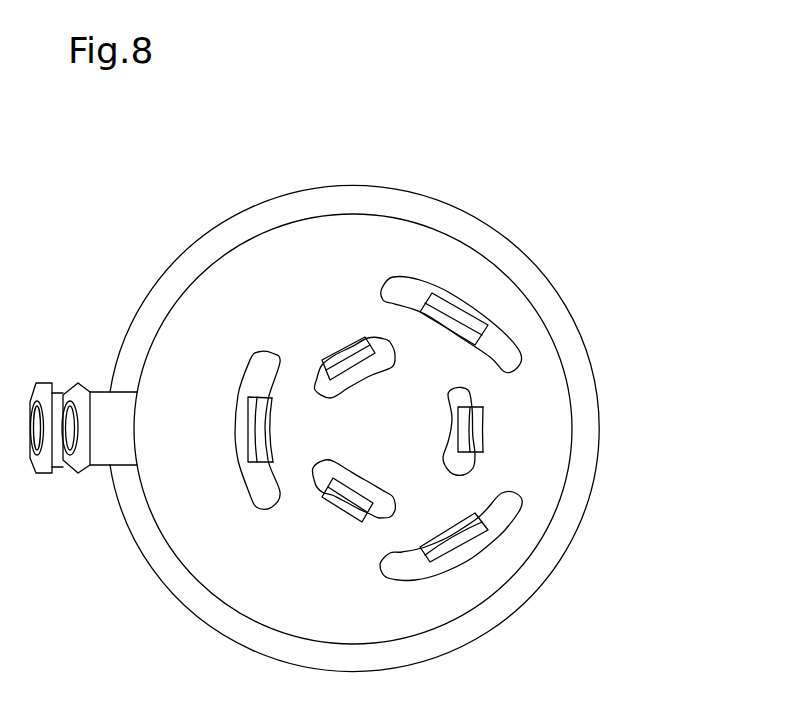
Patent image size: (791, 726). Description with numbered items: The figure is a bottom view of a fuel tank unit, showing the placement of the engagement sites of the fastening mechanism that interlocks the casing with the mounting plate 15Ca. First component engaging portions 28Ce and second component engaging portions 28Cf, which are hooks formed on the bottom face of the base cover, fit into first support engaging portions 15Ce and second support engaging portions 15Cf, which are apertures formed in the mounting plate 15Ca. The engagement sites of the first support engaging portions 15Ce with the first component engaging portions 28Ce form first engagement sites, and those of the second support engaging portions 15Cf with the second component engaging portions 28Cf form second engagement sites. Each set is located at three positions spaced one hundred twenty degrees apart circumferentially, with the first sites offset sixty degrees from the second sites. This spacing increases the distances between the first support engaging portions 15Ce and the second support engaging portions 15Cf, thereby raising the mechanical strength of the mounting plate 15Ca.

The mounting plate 15Ca is at (442, 253).
The first support engaging portion 15Ce is at (460, 397).
The first component engaging portion 28Ce is at (480, 435).
The second support engaging portion 15Cf is at (505, 505).
The second component engaging portion 28Cf is at (455, 547).